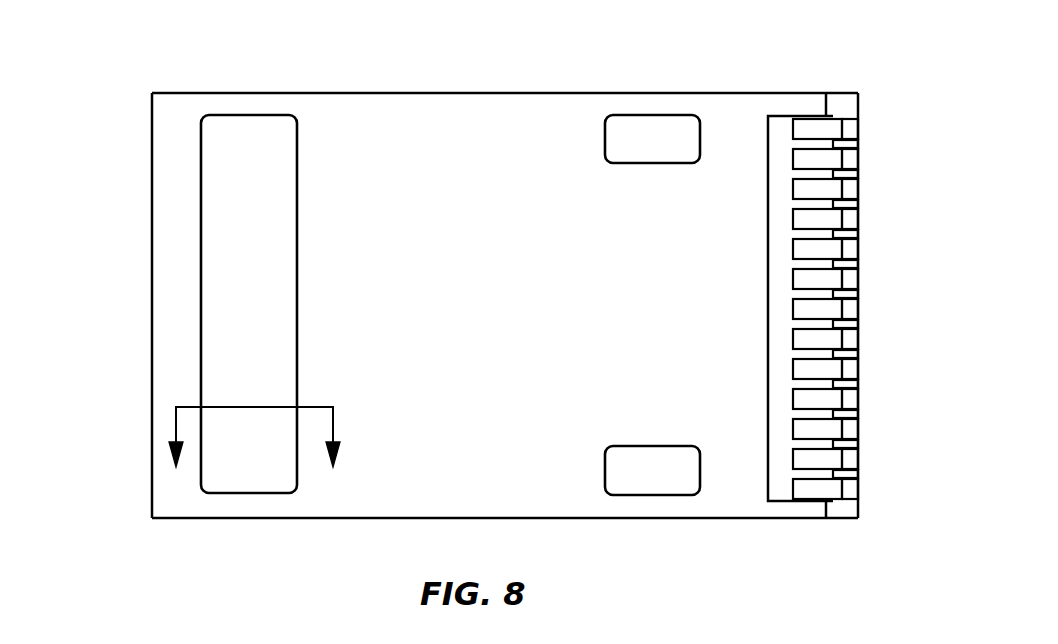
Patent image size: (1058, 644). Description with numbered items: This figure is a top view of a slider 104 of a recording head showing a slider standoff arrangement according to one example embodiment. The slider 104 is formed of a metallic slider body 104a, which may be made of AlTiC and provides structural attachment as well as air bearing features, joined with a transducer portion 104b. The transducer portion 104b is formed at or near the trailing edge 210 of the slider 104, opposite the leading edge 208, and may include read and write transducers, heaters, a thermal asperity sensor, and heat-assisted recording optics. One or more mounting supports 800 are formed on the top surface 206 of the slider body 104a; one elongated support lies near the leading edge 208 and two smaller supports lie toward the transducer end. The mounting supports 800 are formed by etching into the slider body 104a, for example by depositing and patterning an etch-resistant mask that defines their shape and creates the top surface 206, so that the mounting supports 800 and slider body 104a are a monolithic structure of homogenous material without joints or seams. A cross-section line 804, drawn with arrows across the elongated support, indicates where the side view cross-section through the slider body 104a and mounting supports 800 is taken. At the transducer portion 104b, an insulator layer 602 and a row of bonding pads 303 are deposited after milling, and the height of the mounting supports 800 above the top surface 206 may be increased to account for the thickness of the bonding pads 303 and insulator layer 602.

The slider 104 is at (206, 92).
The slider body 104a is at (490, 100).
The transducer portion 104b is at (848, 105).
The mounting supports 800 is at (276, 122).
The insulator layer 602 is at (780, 121).
The bonding pads 303 is at (853, 126).
The leading edge 208 is at (151, 310).
The top surface 206 is at (402, 487).
The trailing edge 210 is at (860, 510).
The cross-section line 804 is at (176, 430).